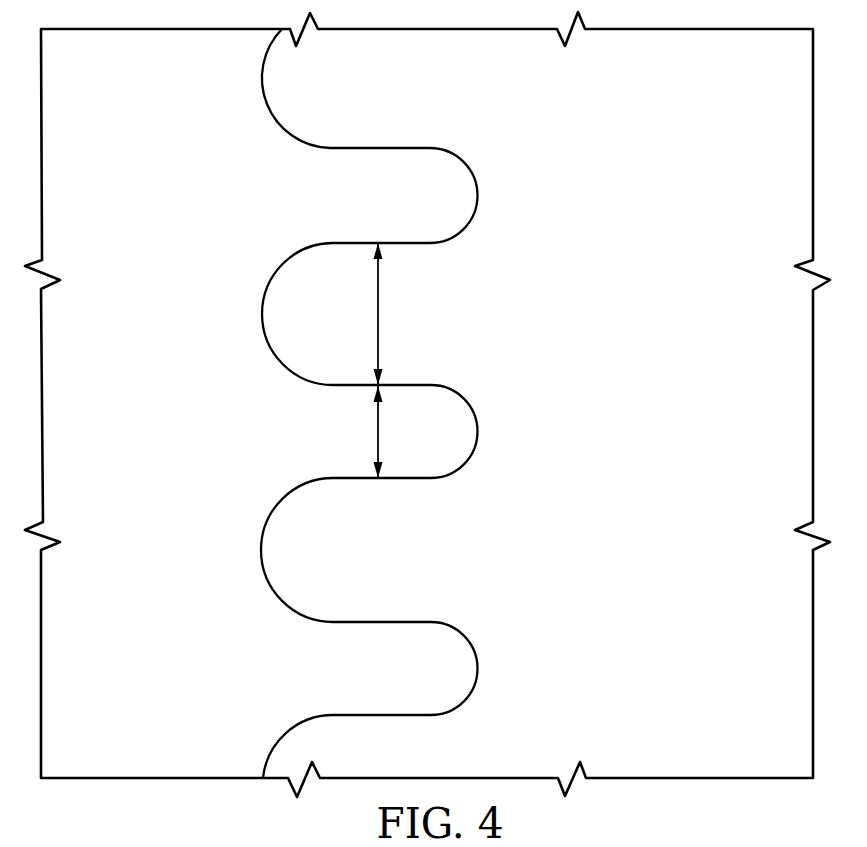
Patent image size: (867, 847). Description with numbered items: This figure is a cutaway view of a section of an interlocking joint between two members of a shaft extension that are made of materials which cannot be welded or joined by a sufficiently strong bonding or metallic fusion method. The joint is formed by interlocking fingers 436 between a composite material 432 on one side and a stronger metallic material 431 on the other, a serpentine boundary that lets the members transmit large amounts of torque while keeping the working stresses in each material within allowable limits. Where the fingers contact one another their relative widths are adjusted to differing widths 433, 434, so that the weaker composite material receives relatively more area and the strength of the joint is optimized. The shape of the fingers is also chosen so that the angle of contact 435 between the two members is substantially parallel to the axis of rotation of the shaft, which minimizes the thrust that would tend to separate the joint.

The metallic material 431 is at (178, 422).
The composite material 432 is at (665, 422).
The finger width 433 is at (378, 315).
The finger width 434 is at (378, 428).
The angle of contact 435 is at (383, 622).
The interlocking fingers 436 is at (460, 189).